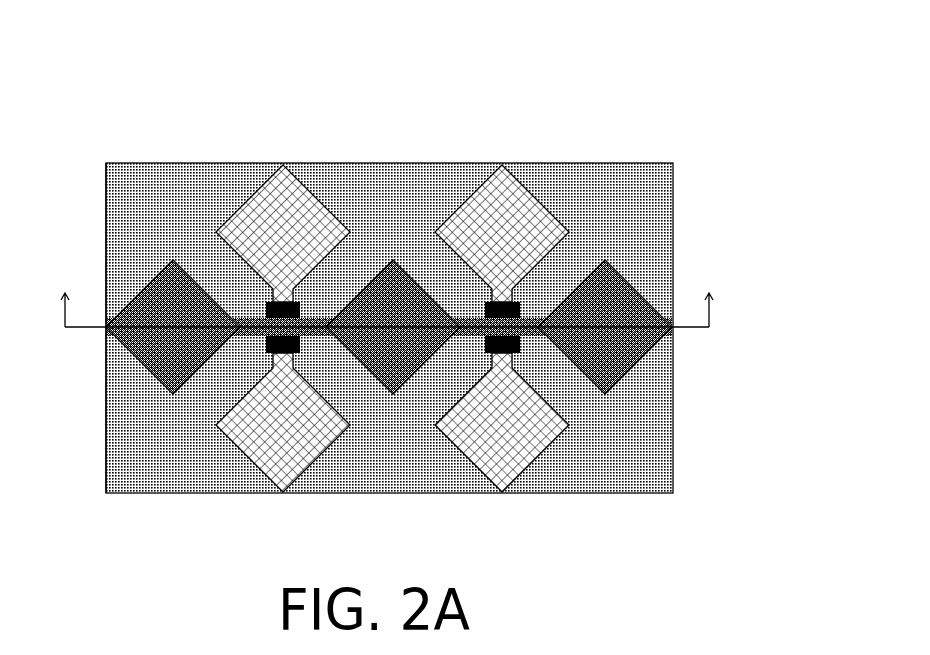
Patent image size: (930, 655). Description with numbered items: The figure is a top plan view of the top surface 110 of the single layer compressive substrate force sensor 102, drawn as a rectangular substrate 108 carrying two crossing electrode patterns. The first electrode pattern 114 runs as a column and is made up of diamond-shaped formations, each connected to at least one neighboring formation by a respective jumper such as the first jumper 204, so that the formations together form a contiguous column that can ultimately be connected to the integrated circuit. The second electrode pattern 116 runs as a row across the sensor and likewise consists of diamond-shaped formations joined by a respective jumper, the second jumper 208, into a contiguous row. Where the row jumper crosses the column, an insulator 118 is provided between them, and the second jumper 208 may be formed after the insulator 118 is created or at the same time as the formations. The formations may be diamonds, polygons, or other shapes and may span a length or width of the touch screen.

The single layer compressive substrate force sensor 102 is at (395, 278).
The substrate 108 is at (153, 163).
The top surface 110 is at (132, 189).
The first electrode pattern 114 is at (232, 440).
The second electrode pattern 116 is at (161, 249).
The insulator 118 is at (265, 352).
The first jumper 204 is at (521, 302).
The second jumper 208 is at (323, 319).